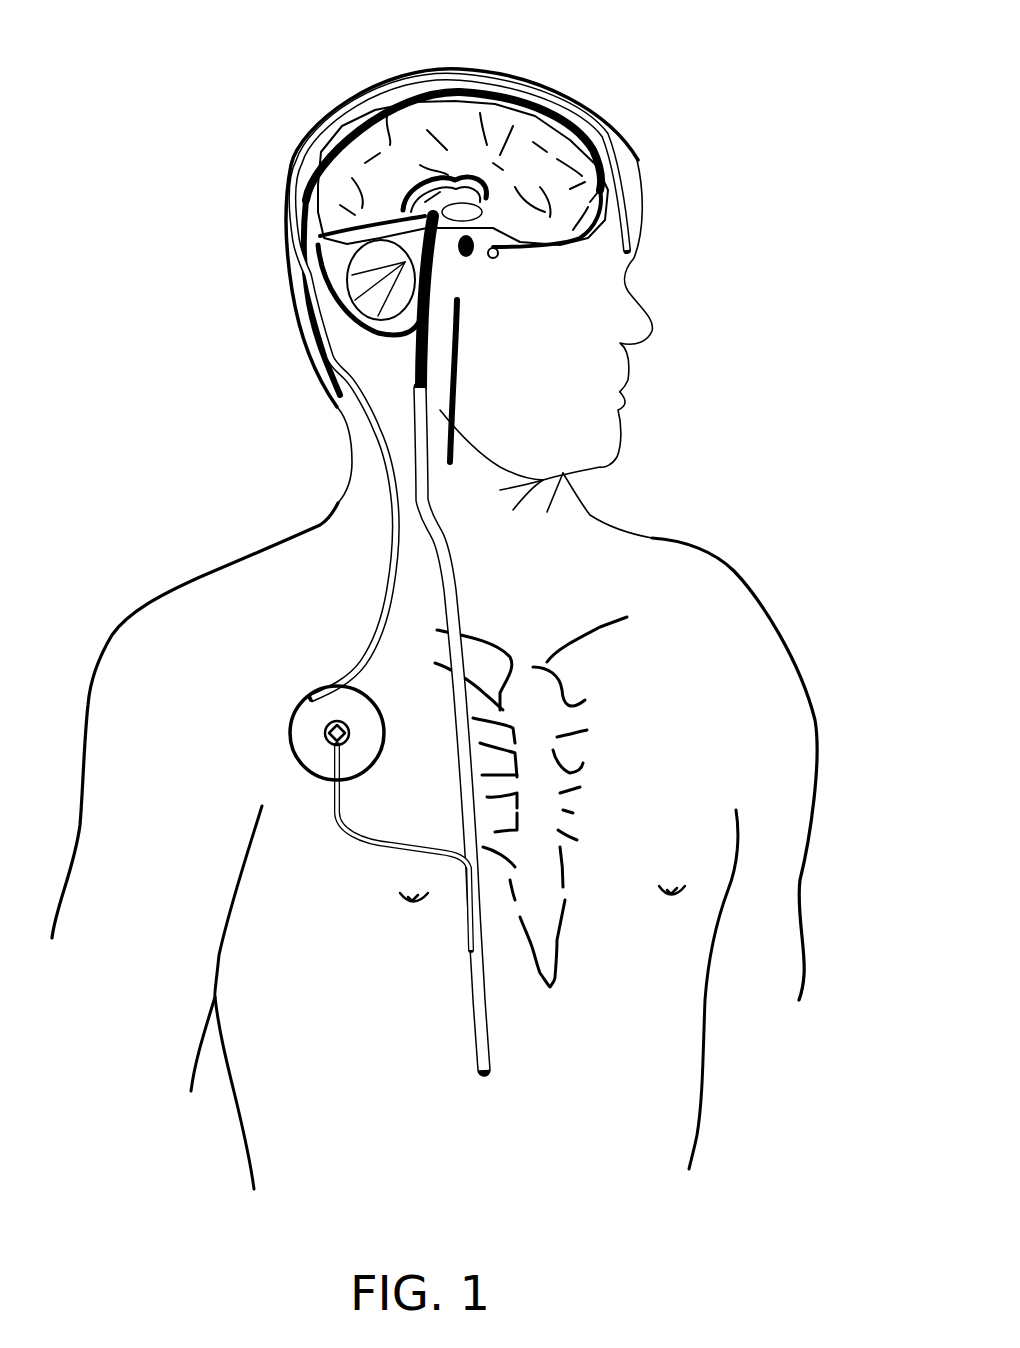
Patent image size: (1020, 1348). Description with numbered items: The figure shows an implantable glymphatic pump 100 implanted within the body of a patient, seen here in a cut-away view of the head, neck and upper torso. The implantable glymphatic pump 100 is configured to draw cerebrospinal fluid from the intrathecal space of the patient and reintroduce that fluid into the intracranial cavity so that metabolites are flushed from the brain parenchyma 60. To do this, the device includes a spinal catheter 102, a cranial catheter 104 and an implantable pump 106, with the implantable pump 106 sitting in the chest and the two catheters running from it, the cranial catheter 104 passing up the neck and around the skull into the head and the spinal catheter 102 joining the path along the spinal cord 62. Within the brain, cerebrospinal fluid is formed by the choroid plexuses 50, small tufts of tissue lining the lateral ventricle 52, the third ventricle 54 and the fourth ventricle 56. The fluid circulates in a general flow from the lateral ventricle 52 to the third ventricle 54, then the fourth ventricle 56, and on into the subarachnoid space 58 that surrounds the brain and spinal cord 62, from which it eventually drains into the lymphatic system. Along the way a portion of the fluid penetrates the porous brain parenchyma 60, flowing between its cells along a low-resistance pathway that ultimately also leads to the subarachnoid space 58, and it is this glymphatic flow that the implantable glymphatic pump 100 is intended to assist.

The implantable glymphatic pump 100 is at (158, 394).
The spinal catheter 102 is at (372, 848).
The cranial catheter 104 is at (333, 123).
The implantable pump 106 is at (303, 712).
The choroid plexuses 50 is at (481, 192).
The lateral ventricle 52 is at (523, 177).
The third ventricle 54 is at (480, 227).
The fourth ventricle 56 is at (423, 288).
The subarachnoid space 58 is at (312, 170).
The brain parenchyma 60 is at (465, 130).
The spinal cord 62 is at (478, 993).